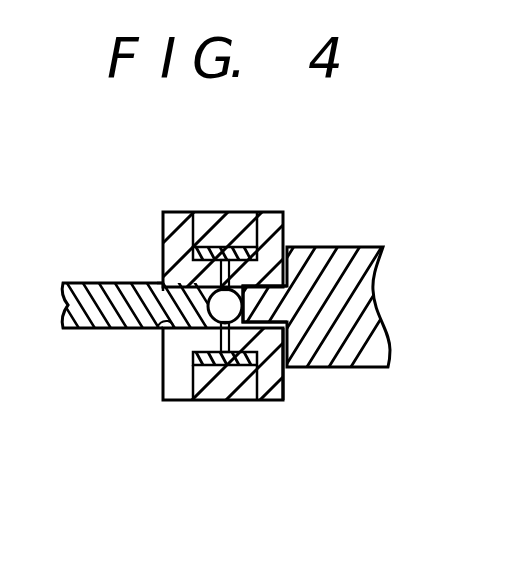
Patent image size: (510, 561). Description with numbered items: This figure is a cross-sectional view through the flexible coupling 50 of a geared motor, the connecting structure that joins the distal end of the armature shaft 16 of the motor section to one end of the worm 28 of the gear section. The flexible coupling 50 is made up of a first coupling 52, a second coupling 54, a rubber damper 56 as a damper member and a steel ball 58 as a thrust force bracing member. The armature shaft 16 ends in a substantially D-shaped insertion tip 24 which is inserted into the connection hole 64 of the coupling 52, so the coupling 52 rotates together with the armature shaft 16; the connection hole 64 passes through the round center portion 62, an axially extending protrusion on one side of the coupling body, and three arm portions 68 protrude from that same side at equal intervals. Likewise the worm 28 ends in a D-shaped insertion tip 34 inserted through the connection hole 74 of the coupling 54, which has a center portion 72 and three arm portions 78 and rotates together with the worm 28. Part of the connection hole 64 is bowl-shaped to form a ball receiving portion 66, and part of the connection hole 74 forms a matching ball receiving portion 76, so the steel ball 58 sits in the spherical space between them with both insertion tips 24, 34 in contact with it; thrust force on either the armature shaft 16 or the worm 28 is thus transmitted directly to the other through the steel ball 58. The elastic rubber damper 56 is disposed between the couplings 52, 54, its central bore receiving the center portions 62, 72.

The armature shaft 16 is at (82, 330).
The insertion tip 24 is at (170, 257).
The worm 28 is at (376, 247).
The insertion tip 34 is at (285, 382).
The flexible coupling 50 is at (255, 172).
The coupling 52 is at (163, 365).
The coupling 54 is at (268, 385).
The rubber damper 56 is at (182, 392).
The steel ball 58 is at (208, 212).
The center portion 62 is at (210, 396).
The connection hole 64 is at (158, 329).
The ball receiving portion 66 is at (192, 212).
The arm portions 68 is at (244, 212).
The center portion 72 is at (215, 395).
The connection hole 74 is at (295, 283).
The ball receiving portion 76 is at (244, 400).
The arm portions 78 is at (228, 392).